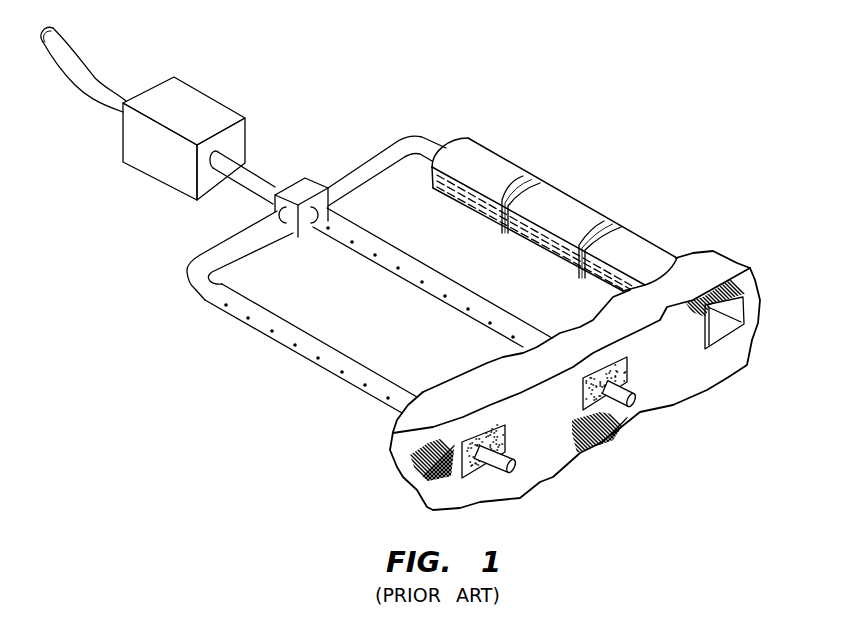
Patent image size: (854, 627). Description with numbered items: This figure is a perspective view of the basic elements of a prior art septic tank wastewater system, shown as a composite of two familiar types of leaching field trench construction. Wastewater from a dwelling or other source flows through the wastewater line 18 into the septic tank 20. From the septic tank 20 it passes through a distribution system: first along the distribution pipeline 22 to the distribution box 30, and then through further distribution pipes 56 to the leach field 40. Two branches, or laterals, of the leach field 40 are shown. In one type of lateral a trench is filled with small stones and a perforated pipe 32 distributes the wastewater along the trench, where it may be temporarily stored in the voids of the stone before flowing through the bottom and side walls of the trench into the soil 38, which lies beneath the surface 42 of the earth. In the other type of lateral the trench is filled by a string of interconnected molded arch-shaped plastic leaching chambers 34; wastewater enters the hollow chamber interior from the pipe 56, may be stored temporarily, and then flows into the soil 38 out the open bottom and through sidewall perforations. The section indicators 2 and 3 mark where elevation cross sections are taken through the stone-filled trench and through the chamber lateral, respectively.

The wastewater line 18 is at (78, 49).
The septic tank 20 is at (203, 88).
The distribution pipeline 22 is at (248, 166).
The distribution box 30 is at (304, 178).
The perforated pipe 32 is at (277, 316).
The leaching chambers 34 is at (642, 235).
The soil 38 is at (562, 458).
The leach field 40 is at (580, 168).
The surface of the earth 42 is at (712, 257).
The distribution pipes 56 is at (413, 136).
The section line 2- 2 is at (352, 369).
The section line 3- 3 is at (462, 171).